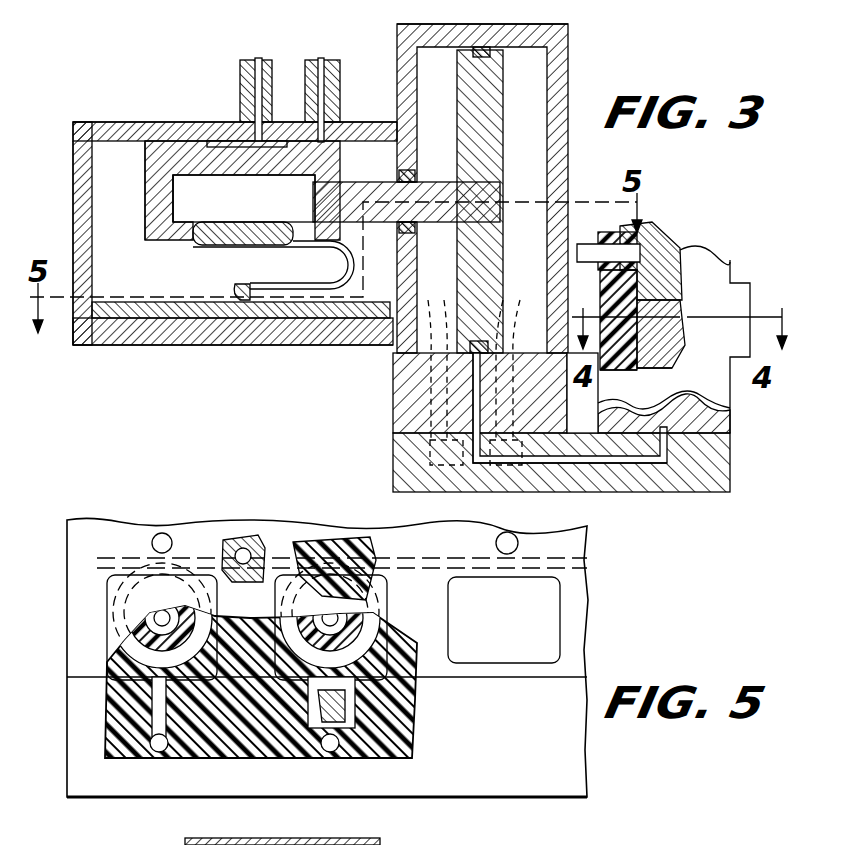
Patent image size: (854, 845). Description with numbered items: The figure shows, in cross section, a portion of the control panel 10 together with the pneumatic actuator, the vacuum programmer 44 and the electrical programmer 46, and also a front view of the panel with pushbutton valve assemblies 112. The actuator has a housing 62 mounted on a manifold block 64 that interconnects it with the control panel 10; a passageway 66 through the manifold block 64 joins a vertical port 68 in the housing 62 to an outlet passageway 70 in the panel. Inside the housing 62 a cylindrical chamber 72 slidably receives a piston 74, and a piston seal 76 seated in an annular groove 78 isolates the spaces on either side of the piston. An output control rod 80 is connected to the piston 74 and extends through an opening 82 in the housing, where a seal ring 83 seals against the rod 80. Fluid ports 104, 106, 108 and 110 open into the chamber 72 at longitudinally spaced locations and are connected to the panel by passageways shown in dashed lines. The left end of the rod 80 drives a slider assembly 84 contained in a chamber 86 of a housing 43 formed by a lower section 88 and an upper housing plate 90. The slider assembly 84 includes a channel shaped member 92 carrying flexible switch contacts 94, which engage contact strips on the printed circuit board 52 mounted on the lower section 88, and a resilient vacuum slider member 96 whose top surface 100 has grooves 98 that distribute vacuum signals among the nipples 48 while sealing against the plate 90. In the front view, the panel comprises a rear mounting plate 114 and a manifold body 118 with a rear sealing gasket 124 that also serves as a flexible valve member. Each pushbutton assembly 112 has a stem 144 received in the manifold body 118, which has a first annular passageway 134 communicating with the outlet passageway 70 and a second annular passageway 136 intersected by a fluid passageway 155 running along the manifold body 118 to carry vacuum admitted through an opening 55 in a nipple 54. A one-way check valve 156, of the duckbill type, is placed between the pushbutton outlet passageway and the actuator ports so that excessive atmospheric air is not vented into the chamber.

In FIG. 3, the control panel 10 is at (737, 271).
In FIG. 3, the housing 43 is at (70, 135).
In FIG. 3, the vacuum programmer 44 is at (222, 119).
In FIG. 3, the electrical programmer 46 is at (208, 346).
In FIG. 3, the nipples 48 is at (263, 60).
In FIG. 3, the printed circuit board 52 is at (150, 297).
In FIG. 3, the nipple 54 is at (585, 245).
In FIG. 3, the opening 55 is at (590, 262).
In FIG. 5, the opening 55 is at (240, 540).
In FIG. 3, the housing 62 is at (440, 398).
In FIG. 3, the manifold block 64 is at (665, 490).
In FIG. 5, the manifold block 64 is at (118, 800).
In FIG. 3, the passageway 66 is at (625, 468).
In FIG. 5, the passageway 66 is at (155, 755).
In FIG. 3, the vertical passageway or port 68 is at (455, 400).
In FIG. 3, the outlet passageway 70 is at (688, 434).
In FIG. 5, the outlet passageway 70 is at (106, 702).
In FIG. 3, the cylindrical chamber 72 is at (426, 70).
In FIG. 3, the piston 74 is at (505, 96).
In FIG. 3, the piston seal 76 is at (497, 27).
In FIG. 3, the annular groove 78 is at (478, 48).
In FIG. 3, the output control rod 80 is at (438, 182).
In FIG. 3, the opening 82 is at (415, 224).
In FIG. 3, the seal ring 83 is at (396, 161).
In FIG. 3, the slider assembly 84 is at (137, 195).
In FIG. 3, the chamber 86 is at (100, 212).
In FIG. 3, the lower section 88 is at (108, 345).
In FIG. 3, the upper housing plate 90 is at (135, 122).
In FIG. 3, the channel shaped member 92 is at (173, 201).
In FIG. 3, the flexible switch contacts 94 is at (314, 281).
In FIG. 3, the vacuum slider member 96 is at (145, 150).
In FIG. 3, the grooves 98 is at (272, 143).
In FIG. 3, the top surface 100 is at (185, 141).
In FIG. 3, the fluid port 104 is at (434, 361).
In FIG. 3, the fluid port 106 is at (444, 382).
In FIG. 3, the fluid port 108 is at (513, 382).
In FIG. 3, the fluid port 110 is at (530, 361).
In FIG. 5, the pushbutton valve assembly 112 is at (120, 571).
In FIG. 3, the rear mounting plate 114 is at (603, 368).
In FIG. 5, the manifold body 118 is at (105, 662).
In FIG. 3, the rear sealing gasket 124 is at (640, 370).
In FIG. 5, the first annular passageway 134 is at (126, 642).
In FIG. 3, the second annular passageway 136 is at (660, 366).
In FIG. 3, the stem portion 144 is at (665, 292).
In FIG. 3, the fluid passageway 155 is at (660, 262).
In FIG. 5, the fluid passageway 155 is at (300, 540).
In FIG. 5, the one-way check valve 156 is at (292, 740).